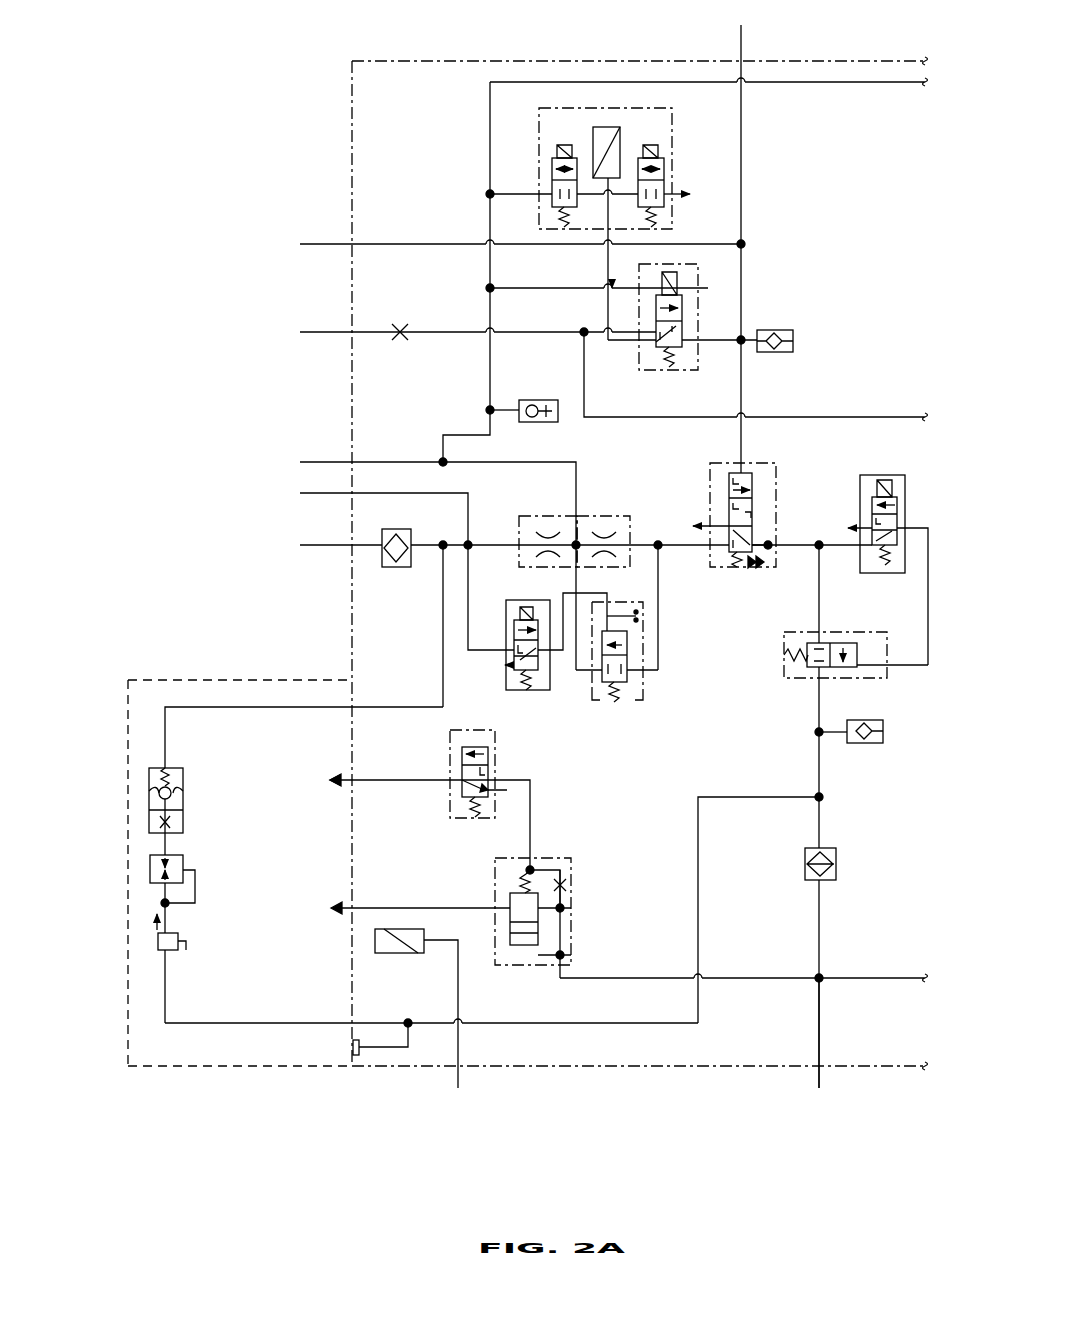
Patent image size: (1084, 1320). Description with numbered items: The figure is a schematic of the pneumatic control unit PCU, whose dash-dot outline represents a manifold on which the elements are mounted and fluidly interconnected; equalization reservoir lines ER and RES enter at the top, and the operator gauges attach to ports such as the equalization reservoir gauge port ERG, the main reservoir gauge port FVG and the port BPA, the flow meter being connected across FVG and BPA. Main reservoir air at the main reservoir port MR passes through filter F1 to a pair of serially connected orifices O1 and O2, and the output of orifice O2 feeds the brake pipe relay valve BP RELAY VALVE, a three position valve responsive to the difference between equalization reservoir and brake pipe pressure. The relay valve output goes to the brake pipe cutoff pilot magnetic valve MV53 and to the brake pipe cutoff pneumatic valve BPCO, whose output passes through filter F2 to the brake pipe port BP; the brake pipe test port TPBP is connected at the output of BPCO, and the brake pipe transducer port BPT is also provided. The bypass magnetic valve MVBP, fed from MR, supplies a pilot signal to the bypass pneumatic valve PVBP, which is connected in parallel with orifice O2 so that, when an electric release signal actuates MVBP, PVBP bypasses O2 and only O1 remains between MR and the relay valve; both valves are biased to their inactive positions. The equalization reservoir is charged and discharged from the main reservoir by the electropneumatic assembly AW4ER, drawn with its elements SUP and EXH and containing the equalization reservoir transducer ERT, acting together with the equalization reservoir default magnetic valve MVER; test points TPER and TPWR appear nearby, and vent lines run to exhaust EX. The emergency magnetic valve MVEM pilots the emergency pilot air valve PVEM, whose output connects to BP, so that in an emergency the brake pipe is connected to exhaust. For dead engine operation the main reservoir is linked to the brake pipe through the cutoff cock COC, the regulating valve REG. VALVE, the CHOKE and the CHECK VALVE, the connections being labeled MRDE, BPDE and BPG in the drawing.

The pneumatic control unit PCU is at (640, 556).
The equalization reservoir pressure ER is at (767, 246).
The reservoir line RES is at (685, 252).
The electropneumatic valve AW4ER is at (605, 159).
The supply magnet valve SUP is at (562, 177).
The equalization reservoir transducer ERT is at (607, 224).
The exhaust magnet valve EXH is at (674, 177).
The equalization reservoir gauge port ERG is at (522, 237).
The equalization reservoir default magnetic valve MVER is at (621, 309).
The exhaust EX is at (614, 372).
The equalization reservoir test point TPER is at (774, 332).
The test port TPWR is at (522, 402).
The port BPA is at (440, 556).
The port FVG is at (407, 563).
The main reservoir port MR is at (586, 619).
The filter F1 is at (385, 550).
The first orifice O1 is at (548, 528).
The second orifice O2 is at (603, 528).
The brake pipe relay valve BP RELAY VALVE is at (757, 496).
The brake pipe cutoff pilot magnetic valve MV53 is at (877, 561).
The brake pipe cutoff pneumatic valve BPCO is at (856, 696).
The bypass magnetic valve MVBP is at (545, 655).
The bypass pneumatic valve PVBP is at (617, 633).
The main reservoir dead engine line MRDE is at (304, 729).
The check valve CHECK VALVE is at (199, 811).
The regulating valve REG. VALVE is at (197, 894).
The cutoff cock COC is at (195, 968).
The emergency magnetic valve MVEM is at (413, 792).
The emergency pilot air valve PVEM is at (434, 910).
The choke CHOKE is at (428, 872).
The brake pipe test port TPBP is at (849, 722).
The filter F2 is at (835, 940).
The brake pipe transducer port BPT is at (434, 1011).
The brake pipe dead engine line BPDE is at (431, 1016).
The brake pipe gauge BPG is at (360, 1041).
The brake pipe port BP is at (836, 1033).